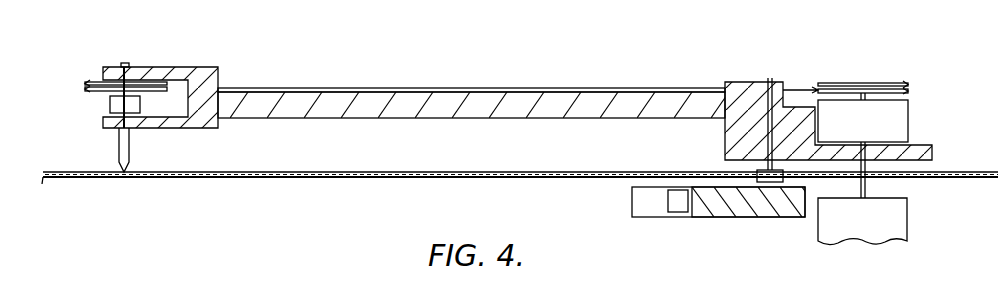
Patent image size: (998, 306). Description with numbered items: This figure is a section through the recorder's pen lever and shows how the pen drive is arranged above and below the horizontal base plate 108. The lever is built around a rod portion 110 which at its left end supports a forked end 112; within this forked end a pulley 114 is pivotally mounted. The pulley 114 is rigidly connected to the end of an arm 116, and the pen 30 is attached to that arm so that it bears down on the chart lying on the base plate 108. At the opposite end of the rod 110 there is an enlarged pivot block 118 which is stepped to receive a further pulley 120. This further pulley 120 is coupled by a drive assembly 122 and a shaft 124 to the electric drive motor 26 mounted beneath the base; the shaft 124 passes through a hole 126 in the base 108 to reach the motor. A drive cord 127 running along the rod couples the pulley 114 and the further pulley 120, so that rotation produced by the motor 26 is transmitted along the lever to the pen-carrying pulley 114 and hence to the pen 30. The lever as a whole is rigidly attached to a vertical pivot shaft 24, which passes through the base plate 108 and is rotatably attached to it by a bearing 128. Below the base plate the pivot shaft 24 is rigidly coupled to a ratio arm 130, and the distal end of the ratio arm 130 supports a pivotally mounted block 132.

The vertical pivot shaft 24 is at (767, 160).
The electric drive motor 26 is at (903, 225).
The pen 30 is at (121, 170).
The horizontal base plate 108 is at (488, 175).
The rod portion 110 is at (378, 112).
The forked end 112 is at (193, 77).
The pulley 114 is at (132, 82).
The arm 116 is at (112, 105).
The enlarged pivot block 118 is at (790, 53).
The further pulley 120 is at (890, 60).
The drive assembly 122 is at (900, 125).
The shaft 124 is at (867, 190).
The hole 126 is at (830, 180).
The drive cord 127 is at (307, 88).
The bearing 128 is at (797, 187).
The ratio arm 130 is at (723, 217).
The block 132 is at (682, 208).